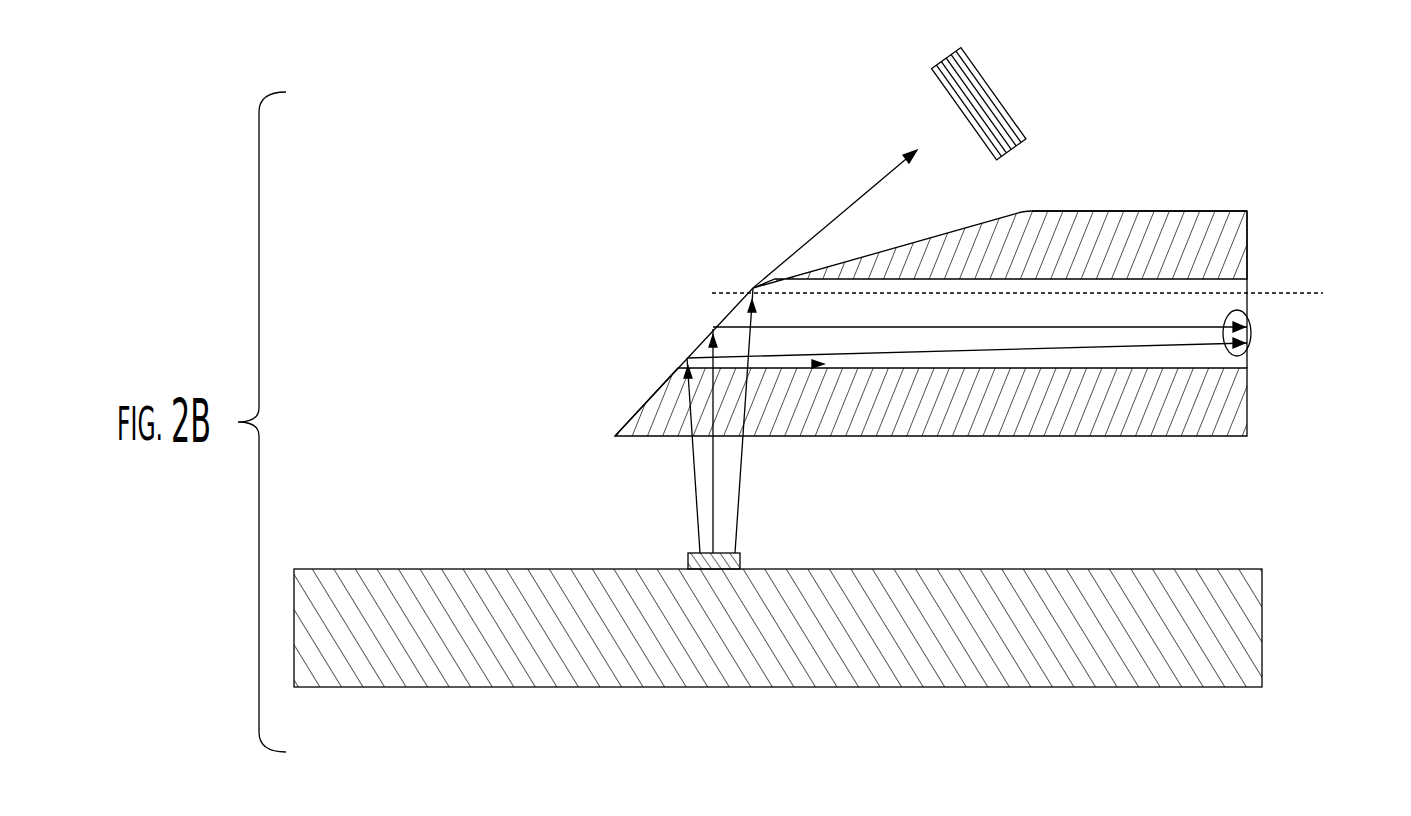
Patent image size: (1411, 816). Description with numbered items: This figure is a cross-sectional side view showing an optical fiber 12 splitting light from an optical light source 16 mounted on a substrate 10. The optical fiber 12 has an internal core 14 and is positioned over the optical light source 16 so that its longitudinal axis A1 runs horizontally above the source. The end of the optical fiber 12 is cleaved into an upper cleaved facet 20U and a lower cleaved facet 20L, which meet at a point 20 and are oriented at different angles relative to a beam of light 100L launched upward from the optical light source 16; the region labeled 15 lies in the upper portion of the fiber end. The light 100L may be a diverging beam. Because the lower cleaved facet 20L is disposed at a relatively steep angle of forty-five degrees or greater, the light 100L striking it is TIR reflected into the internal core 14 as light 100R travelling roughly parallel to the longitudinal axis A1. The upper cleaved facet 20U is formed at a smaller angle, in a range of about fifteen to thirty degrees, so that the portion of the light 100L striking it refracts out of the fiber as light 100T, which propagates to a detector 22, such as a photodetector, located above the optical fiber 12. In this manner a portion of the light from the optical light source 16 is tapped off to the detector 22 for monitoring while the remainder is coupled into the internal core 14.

The substrate 10 is at (1080, 568).
The optical fiber 12 is at (1233, 438).
The internal core 14 is at (1170, 290).
The upper surface portion of lens 15 is at (1200, 240).
The optical light source 16 is at (738, 558).
The point 20 is at (925, 326).
The lower cleaved facet 20L is at (630, 419).
The upper cleaved facet 20U is at (970, 227).
The detector 22 is at (986, 78).
The light 100L is at (675, 500).
The light 100R is at (1245, 312).
The light 100T is at (847, 202).
The longitudinal axis A1 is at (1032, 293).